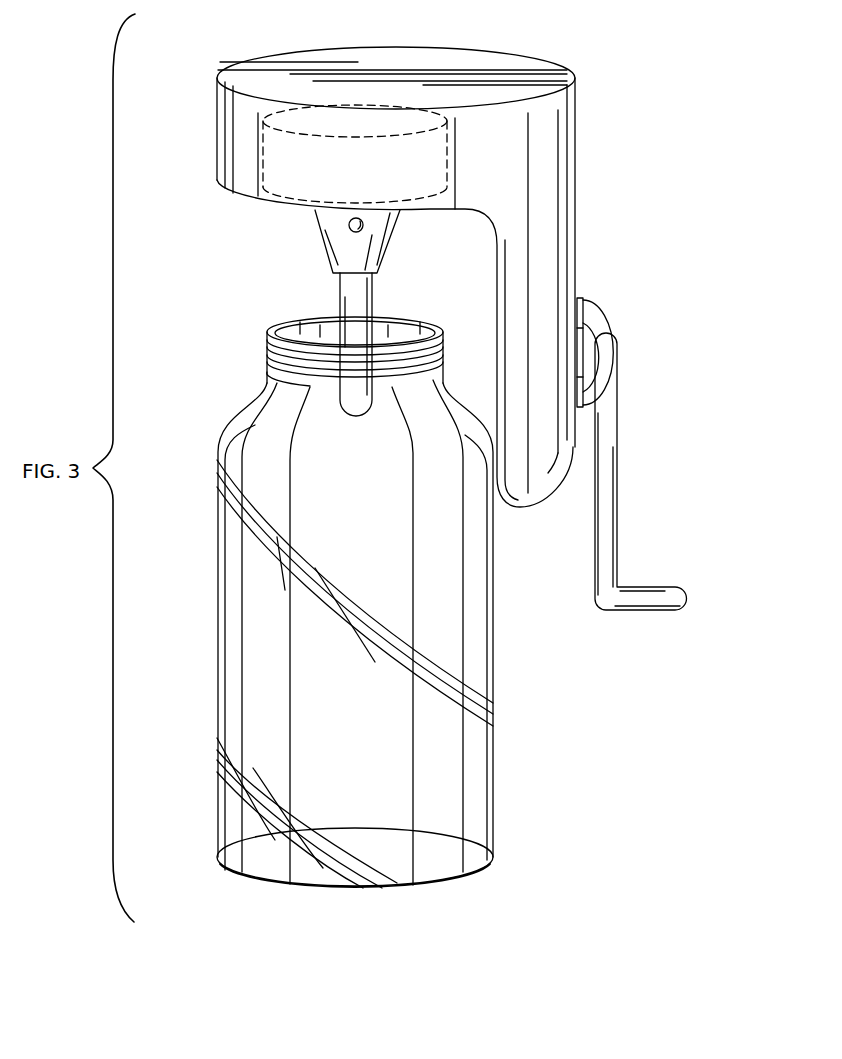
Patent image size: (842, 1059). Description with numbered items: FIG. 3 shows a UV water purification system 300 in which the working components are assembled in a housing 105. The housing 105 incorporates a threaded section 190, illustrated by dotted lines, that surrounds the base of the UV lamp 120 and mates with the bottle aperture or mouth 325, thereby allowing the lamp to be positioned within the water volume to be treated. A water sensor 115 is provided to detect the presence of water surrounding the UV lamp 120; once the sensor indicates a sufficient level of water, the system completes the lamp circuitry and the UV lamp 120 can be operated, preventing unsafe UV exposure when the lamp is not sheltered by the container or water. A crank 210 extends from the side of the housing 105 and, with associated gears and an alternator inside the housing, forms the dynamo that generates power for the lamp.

The dispensing apparatus assembly 300 is at (631, 23).
The housing 105 is at (215, 120).
The threaded section 190 is at (455, 137).
The water sensor 115 is at (349, 228).
The UV lamp 120 is at (337, 310).
The bottle aperture (mouth) 325 is at (267, 342).
The crank handle 210 is at (617, 480).